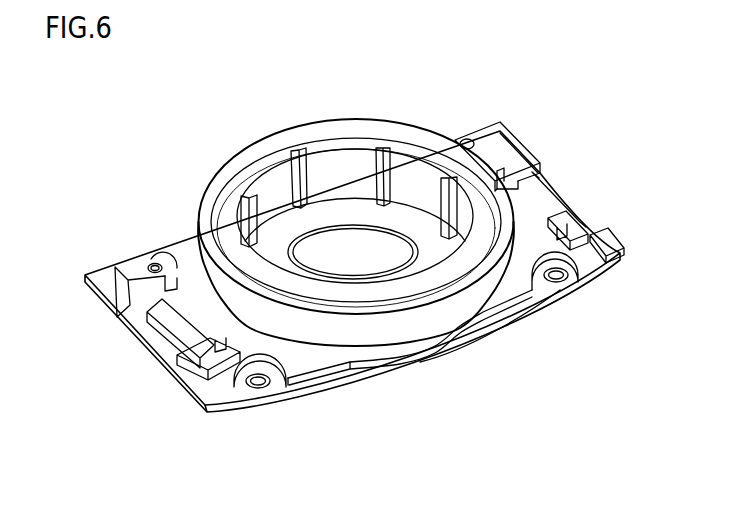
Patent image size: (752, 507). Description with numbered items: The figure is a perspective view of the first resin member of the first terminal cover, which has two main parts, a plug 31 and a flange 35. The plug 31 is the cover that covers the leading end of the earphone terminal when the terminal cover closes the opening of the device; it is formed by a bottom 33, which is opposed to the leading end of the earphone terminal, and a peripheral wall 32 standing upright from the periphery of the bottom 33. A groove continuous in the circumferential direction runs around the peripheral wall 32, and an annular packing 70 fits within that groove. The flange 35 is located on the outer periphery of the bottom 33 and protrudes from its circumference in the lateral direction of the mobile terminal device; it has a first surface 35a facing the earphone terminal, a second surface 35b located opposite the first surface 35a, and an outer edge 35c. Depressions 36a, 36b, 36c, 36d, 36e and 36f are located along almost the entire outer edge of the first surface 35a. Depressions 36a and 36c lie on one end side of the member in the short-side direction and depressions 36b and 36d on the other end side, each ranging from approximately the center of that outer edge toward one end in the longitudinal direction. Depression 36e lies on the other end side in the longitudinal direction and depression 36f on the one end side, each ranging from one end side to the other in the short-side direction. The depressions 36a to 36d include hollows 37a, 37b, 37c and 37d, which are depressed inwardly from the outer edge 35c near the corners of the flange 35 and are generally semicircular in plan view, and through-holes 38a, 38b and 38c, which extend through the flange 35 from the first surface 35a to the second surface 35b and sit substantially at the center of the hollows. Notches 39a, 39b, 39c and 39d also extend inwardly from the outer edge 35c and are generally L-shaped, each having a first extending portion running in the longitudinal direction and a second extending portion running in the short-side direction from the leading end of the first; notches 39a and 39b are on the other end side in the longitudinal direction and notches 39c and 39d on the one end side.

The plug 31 is at (355, 164).
The peripheral wall 32 is at (270, 195).
The bottom 33 is at (332, 213).
The flange 35 is at (197, 302).
The first surface 35a is at (528, 204).
The second surface 35b is at (363, 388).
The outer edge 35c is at (476, 342).
The depression 36a is at (257, 394).
The depression 36b is at (143, 258).
The depression 36c is at (555, 286).
The depression 36d is at (456, 140).
The depression 36e is at (162, 343).
The depression 36f is at (570, 211).
The hollow 37a is at (270, 382).
The hollow 37b is at (168, 274).
The hollow 37c is at (567, 265).
The hollow 37d is at (470, 148).
The through-hole 38a is at (278, 388).
The through-hole 38b is at (140, 265).
The through-hole 38c is at (571, 285).
The notch 39a is at (180, 367).
The notch 39b is at (117, 317).
The notch 39c is at (577, 228).
The notch 39d is at (505, 178).
The annular packing 70 is at (414, 322).